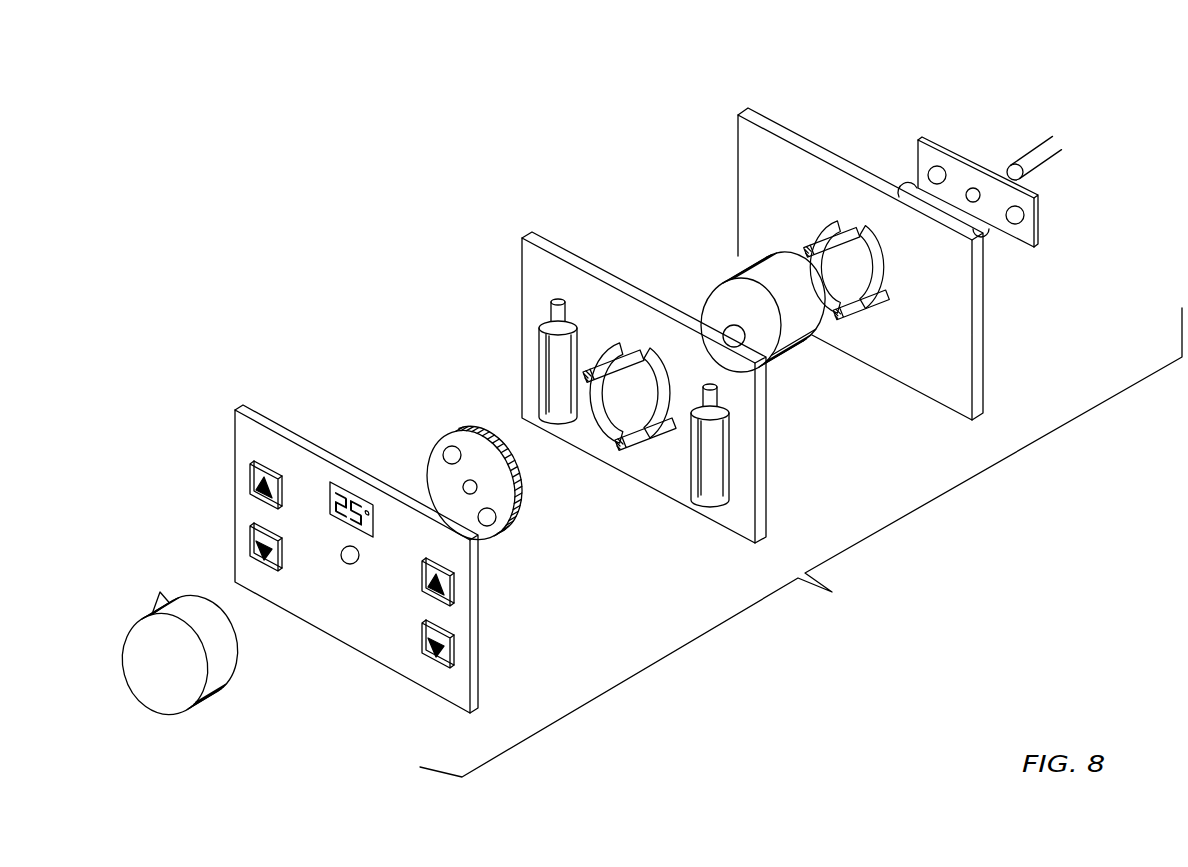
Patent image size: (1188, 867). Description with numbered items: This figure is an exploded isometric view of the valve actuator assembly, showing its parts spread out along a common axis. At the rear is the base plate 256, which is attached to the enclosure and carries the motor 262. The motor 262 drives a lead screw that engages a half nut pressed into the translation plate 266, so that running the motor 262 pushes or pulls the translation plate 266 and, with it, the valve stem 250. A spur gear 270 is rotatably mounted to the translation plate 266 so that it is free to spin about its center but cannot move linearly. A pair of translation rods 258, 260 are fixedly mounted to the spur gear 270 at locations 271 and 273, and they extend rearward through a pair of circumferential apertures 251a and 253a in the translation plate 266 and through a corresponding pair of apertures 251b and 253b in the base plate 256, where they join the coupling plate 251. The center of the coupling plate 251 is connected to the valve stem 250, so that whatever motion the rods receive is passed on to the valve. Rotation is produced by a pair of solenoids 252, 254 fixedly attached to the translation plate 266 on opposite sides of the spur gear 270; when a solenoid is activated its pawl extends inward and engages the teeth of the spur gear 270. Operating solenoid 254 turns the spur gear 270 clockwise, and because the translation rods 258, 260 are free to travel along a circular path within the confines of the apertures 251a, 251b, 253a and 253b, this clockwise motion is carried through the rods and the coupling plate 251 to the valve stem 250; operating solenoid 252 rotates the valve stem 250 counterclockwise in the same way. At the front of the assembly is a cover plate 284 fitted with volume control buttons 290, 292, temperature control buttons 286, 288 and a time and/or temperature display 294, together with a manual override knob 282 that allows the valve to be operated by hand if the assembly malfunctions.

The valve stem 250 is at (1037, 153).
The coupling plate 251 is at (943, 153).
The circumferential aperture 251a is at (610, 412).
The aperture 251b is at (807, 263).
The solenoid 252 is at (558, 387).
The circumferential aperture 253a is at (657, 372).
The aperture 253b is at (880, 258).
The solenoid 254 is at (715, 485).
The base plate 256 is at (943, 385).
The translation rod 258 is at (647, 427).
The translation rod 260 is at (618, 357).
The motor 262 is at (792, 323).
The translation plate 266 is at (757, 506).
The spur gear 270 is at (514, 514).
The location 271 is at (490, 524).
The location 273 is at (450, 452).
The manual override knob 282 is at (210, 662).
The cover plate 284 is at (470, 667).
The temperature control button 286 is at (452, 587).
The temperature control button 288 is at (443, 655).
The volume control button 290 is at (250, 470).
The volume control button 292 is at (250, 541).
The time and/or temperature display 294 is at (353, 497).